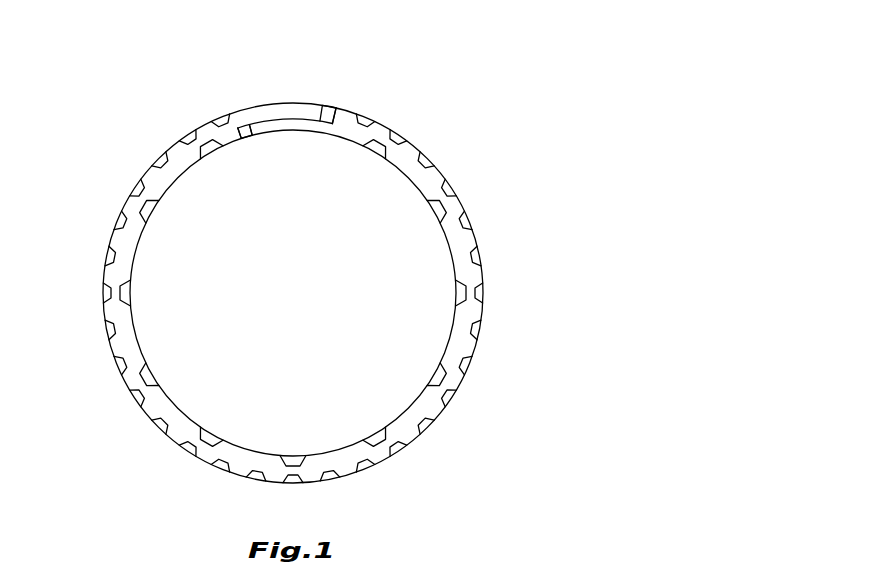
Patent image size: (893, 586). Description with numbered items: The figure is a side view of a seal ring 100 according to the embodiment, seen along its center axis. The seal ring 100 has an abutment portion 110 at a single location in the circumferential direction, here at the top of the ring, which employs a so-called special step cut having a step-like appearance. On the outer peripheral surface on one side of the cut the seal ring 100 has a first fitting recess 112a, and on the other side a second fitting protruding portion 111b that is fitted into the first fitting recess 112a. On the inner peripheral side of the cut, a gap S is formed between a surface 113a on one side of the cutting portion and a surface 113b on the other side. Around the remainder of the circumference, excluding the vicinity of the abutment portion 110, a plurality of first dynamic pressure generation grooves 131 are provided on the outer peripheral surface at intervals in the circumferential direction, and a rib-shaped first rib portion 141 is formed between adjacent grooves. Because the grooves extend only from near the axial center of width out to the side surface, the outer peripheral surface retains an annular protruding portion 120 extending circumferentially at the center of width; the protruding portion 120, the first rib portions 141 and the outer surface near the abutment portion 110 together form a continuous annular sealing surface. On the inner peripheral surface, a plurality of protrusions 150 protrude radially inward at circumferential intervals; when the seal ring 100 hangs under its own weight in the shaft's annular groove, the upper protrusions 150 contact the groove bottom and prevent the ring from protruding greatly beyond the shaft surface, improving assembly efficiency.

The seal ring 100 is at (558, 92).
The abutment portion 110 is at (291, 98).
The second fitting protruding portion 111b is at (313, 117).
The first fitting recess 112a is at (334, 113).
The surface of the inner peripheral surface on one side 113a is at (253, 131).
The surface of the inner peripheral surface on the other side 113b is at (243, 137).
The annular protruding portion 120 is at (133, 190).
The first dynamic pressure generation groove 131 is at (102, 257).
The first rib portion 141 is at (170, 153).
The protrusion 150 is at (158, 217).
The gap S is at (247, 128).